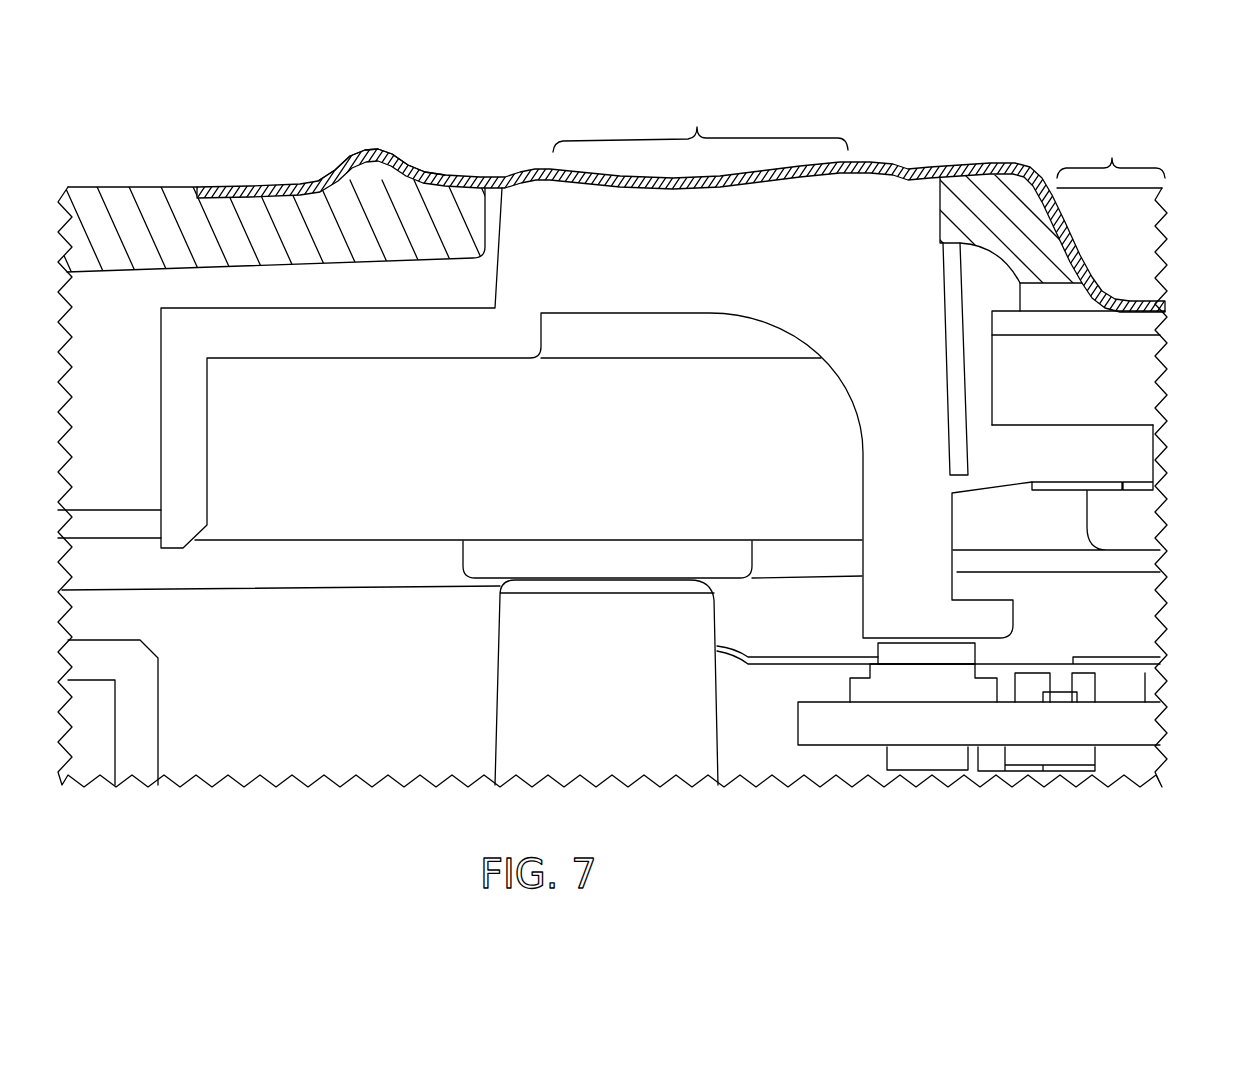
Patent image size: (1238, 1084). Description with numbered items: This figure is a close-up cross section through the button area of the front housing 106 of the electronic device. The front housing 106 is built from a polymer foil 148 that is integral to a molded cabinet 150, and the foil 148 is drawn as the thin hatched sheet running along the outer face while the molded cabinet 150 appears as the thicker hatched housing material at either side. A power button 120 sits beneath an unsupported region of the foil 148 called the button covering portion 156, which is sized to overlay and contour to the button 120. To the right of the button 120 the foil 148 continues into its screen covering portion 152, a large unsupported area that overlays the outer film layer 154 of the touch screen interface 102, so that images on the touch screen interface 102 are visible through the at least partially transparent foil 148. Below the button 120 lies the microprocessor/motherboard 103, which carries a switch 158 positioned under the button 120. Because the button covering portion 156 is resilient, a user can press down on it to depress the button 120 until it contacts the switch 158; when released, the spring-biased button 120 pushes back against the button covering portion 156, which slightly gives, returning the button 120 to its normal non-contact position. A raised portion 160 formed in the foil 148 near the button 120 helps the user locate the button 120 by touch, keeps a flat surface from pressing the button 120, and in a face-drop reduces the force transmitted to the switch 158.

The touch screen interface 102 is at (1148, 386).
The microprocessor/motherboard 103 is at (798, 723).
The front housing 106 is at (103, 187).
The power button 120 is at (722, 265).
The polymer foil 148 is at (971, 172).
The molded cabinet 150 is at (170, 193).
The screen covering portion 152 is at (1111, 154).
The outer film layer 154 is at (1148, 325).
The button covering portion 156 is at (700, 124).
The switch 158 is at (975, 657).
The raised portion 160 is at (368, 150).